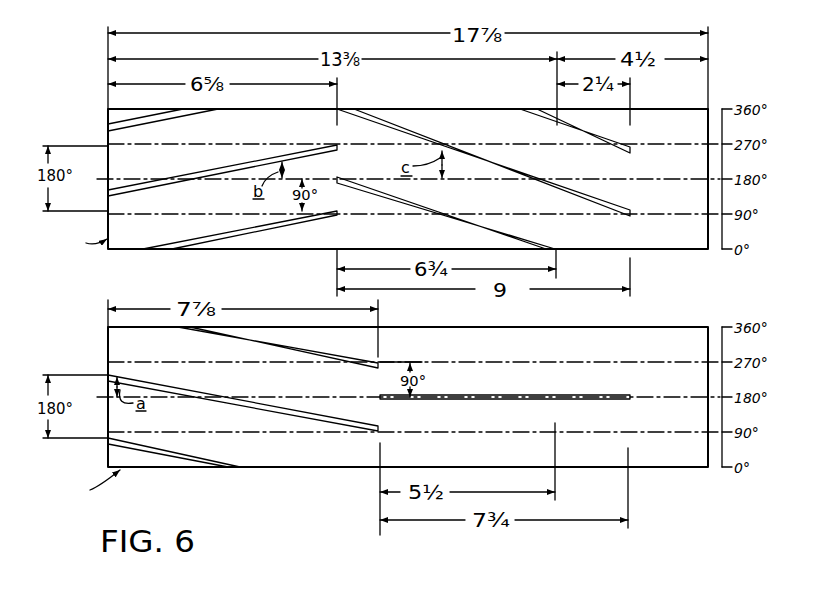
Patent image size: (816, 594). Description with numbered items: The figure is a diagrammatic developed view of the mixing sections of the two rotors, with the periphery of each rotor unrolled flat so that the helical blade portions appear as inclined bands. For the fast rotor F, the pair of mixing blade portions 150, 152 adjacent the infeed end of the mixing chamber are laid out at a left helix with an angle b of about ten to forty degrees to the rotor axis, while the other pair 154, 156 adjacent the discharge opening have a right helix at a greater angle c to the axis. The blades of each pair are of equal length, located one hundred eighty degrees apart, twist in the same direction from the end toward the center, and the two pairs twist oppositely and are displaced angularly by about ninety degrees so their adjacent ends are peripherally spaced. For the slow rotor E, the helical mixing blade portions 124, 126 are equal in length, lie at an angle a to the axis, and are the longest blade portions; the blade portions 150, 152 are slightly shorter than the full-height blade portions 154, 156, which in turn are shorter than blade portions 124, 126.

The mixing blade portion 150 is at (219, 168).
The mixing blade portion 152 is at (196, 238).
The mixing blade portion 154 is at (523, 142).
The mixing blade portion 156 is at (442, 219).
The mixing blade portion 124 is at (295, 417).
The mixing blade portion 126 is at (299, 355).
The rotor E is at (97, 485).
The rotor F is at (87, 241).